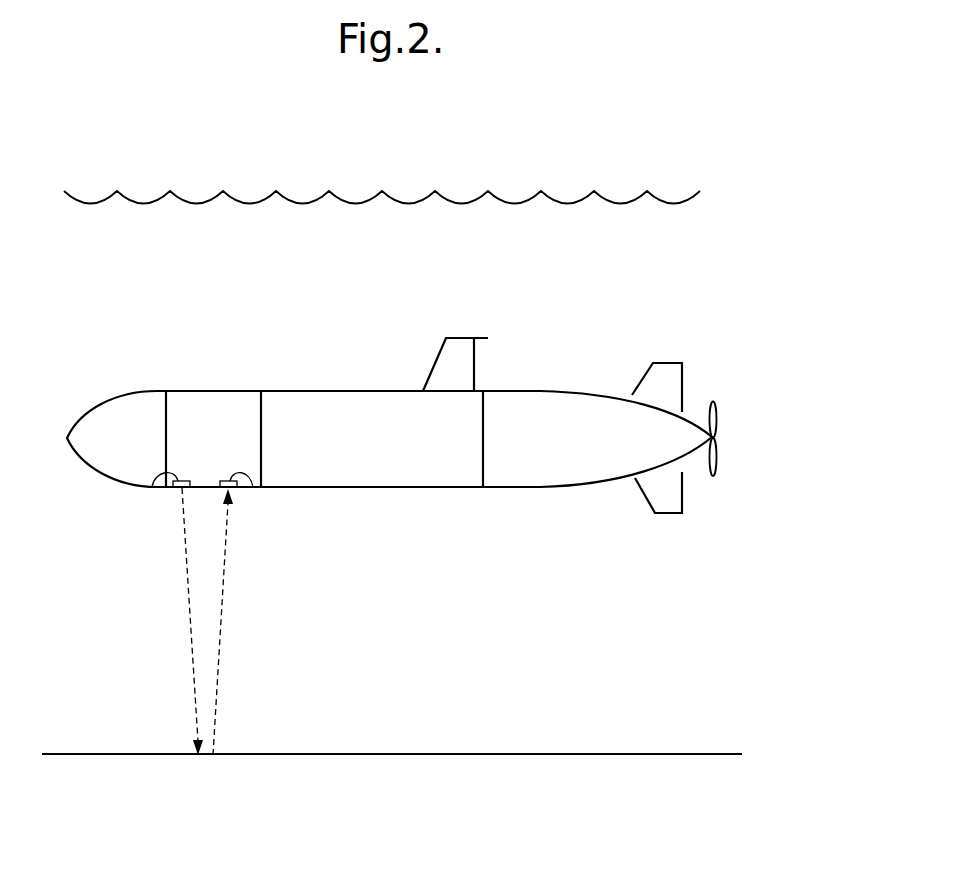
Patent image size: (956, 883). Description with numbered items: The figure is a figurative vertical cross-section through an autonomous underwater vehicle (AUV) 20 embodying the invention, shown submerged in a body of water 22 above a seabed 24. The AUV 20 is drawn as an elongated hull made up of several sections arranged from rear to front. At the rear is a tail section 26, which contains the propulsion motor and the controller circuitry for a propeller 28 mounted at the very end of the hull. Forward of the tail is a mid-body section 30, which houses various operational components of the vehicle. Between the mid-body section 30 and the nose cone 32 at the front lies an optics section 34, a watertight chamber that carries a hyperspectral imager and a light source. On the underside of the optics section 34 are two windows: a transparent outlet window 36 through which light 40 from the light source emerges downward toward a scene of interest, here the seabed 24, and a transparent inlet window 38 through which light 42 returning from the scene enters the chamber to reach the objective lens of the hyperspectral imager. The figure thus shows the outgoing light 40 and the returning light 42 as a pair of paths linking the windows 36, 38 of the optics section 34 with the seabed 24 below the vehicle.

The autonomous underwater vehicle 20 is at (699, 270).
The body of water 22 is at (339, 245).
The seabed 24 is at (377, 755).
The tail section 26 is at (533, 410).
The propeller 28 is at (717, 412).
The mid-body section 30 is at (403, 452).
The nose cone 32 is at (125, 413).
The optics section 34 is at (219, 403).
The transparent outlet window 36 is at (152, 487).
The transparent inlet window 38 is at (253, 487).
The light from the light source 40 is at (192, 638).
The returning light 42 is at (225, 595).